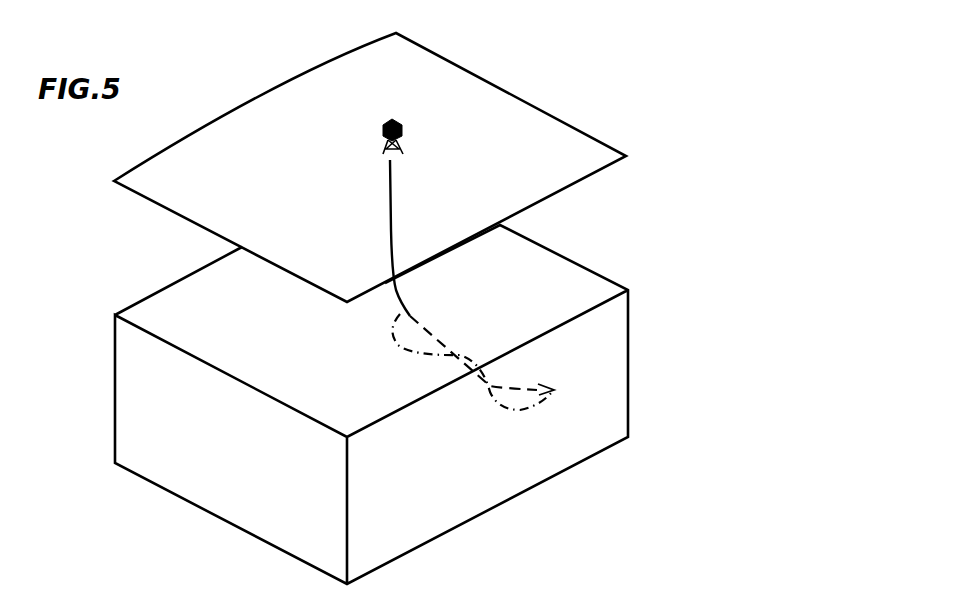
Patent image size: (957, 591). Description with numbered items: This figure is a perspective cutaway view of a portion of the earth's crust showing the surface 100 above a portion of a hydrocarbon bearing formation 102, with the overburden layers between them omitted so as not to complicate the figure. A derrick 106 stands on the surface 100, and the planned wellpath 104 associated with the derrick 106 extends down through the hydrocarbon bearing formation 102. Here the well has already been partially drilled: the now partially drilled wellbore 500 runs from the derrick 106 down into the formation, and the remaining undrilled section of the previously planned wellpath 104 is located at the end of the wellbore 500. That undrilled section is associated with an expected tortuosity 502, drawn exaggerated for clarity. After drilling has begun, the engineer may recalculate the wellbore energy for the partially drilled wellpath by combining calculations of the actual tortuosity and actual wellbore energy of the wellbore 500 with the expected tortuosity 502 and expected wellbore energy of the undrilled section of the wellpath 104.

The surface of the earth 100 is at (418, 80).
The hydrocarbon bearing formation 102 is at (197, 452).
The planned wellpath 104 is at (427, 328).
The derrick 106 is at (403, 128).
The partially drilled wellbore 500 is at (393, 188).
The expected tortuosity 502 is at (397, 345).